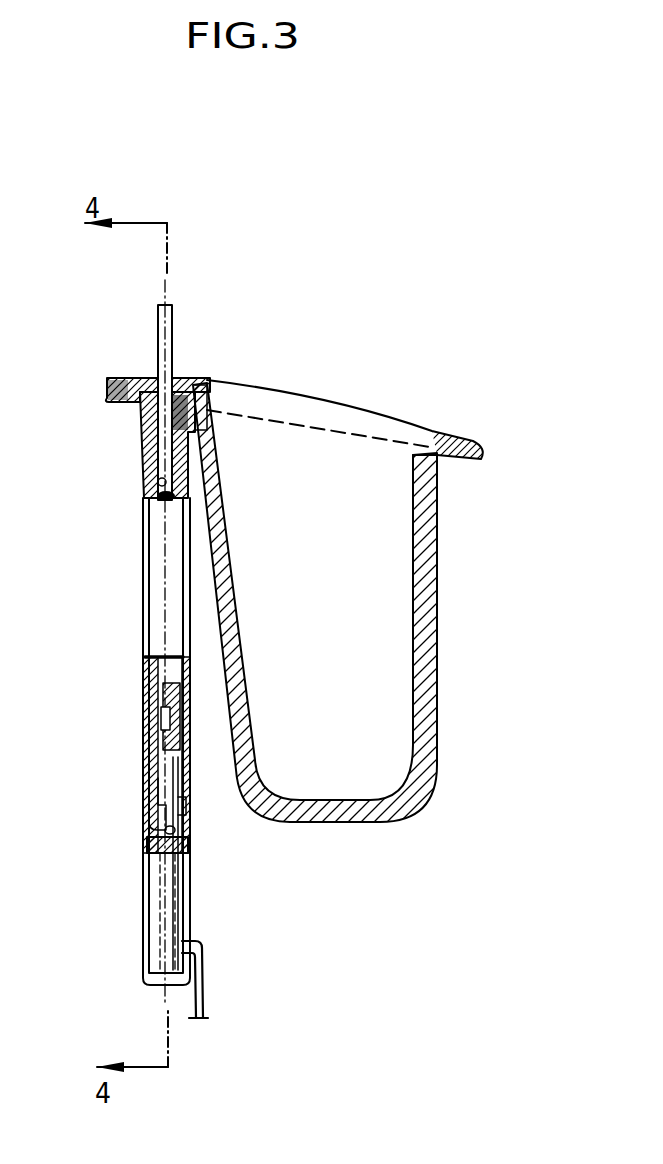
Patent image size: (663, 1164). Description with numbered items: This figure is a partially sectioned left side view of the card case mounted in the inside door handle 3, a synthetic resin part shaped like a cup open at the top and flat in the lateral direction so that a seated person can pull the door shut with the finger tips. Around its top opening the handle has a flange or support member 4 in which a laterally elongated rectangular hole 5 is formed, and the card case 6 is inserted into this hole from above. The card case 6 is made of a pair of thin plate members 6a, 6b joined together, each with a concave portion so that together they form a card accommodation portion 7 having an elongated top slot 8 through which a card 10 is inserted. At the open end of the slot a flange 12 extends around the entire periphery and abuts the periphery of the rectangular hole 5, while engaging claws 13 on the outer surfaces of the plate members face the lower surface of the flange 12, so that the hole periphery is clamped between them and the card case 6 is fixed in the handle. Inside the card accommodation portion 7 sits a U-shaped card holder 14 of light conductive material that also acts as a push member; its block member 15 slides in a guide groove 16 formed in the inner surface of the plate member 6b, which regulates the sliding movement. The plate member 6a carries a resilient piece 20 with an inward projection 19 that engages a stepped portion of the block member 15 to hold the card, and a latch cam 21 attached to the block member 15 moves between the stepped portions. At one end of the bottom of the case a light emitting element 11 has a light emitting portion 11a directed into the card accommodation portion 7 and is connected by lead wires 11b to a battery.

The inside door handle 3 is at (427, 571).
The flange or support member 4 is at (123, 374).
The rectangular hole 5 is at (210, 381).
The card case 6 is at (147, 610).
The plate member 6a is at (150, 692).
The plate member 6b is at (190, 697).
The card accommodation portion 7 is at (143, 484).
The top slot 8 is at (178, 373).
The card 10 is at (173, 323).
The light emitting element 11 is at (183, 902).
The light emitting portion 11a is at (175, 827).
The lead wires 11b is at (205, 1000).
The flange 12 is at (113, 391).
The engaging claws 13 is at (132, 419).
The card holder 14 is at (150, 665).
The block member 15 is at (180, 731).
The guide groove 16 is at (185, 806).
The inward projection 19 is at (150, 839).
The resilient piece 20 is at (150, 788).
The latch cam 21 is at (160, 733).